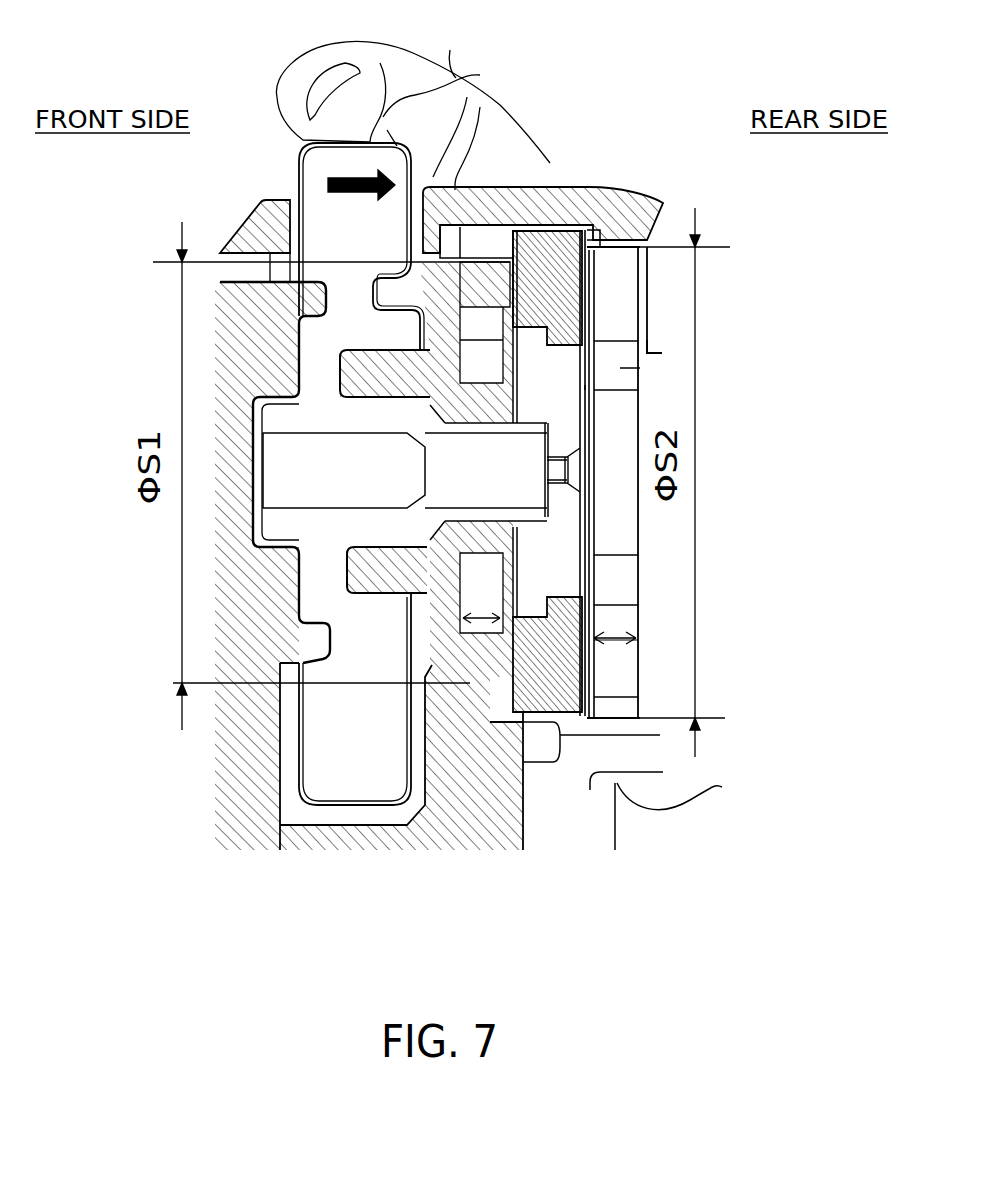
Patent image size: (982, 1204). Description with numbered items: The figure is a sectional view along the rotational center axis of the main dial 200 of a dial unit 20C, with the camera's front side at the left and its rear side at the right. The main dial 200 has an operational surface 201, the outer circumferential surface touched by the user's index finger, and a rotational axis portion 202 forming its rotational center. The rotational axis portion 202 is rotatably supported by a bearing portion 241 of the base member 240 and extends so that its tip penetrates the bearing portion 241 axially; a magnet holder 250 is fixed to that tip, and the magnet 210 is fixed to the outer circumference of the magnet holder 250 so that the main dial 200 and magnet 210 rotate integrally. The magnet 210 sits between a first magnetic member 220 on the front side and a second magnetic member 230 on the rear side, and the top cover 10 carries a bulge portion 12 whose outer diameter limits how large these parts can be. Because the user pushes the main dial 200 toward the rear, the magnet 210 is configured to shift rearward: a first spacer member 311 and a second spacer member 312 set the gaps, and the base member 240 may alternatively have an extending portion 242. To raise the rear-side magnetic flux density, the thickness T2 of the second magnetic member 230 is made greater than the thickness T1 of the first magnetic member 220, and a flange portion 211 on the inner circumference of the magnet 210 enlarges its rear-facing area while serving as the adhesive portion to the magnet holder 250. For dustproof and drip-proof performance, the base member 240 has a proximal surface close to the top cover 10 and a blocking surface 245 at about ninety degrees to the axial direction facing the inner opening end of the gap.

The operational surface 201 is at (433, 135).
The dial unit 20C is at (623, 68).
The bulge portion 12 is at (478, 232).
The bearing portion 241 is at (486, 262).
The magnet 210 is at (553, 258).
The top cover 10 is at (590, 272).
The blocking surface 245 is at (440, 245).
The main dial 200 is at (290, 250).
The first spacer member 311 is at (370, 348).
The rotational axis portion 202 is at (480, 430).
The extending portion 242 is at (628, 247).
The flange portion 211 is at (640, 358).
The second spacer member 312 is at (590, 373).
The magnet holder 250 is at (560, 435).
The first magnetic member 220 is at (588, 560).
The second magnetic member 230 is at (608, 582).
The thickness of the first magnetic member T1 is at (583, 587).
The thickness of the second magnetic member T2 is at (615, 642).
The base member 240 is at (450, 820).